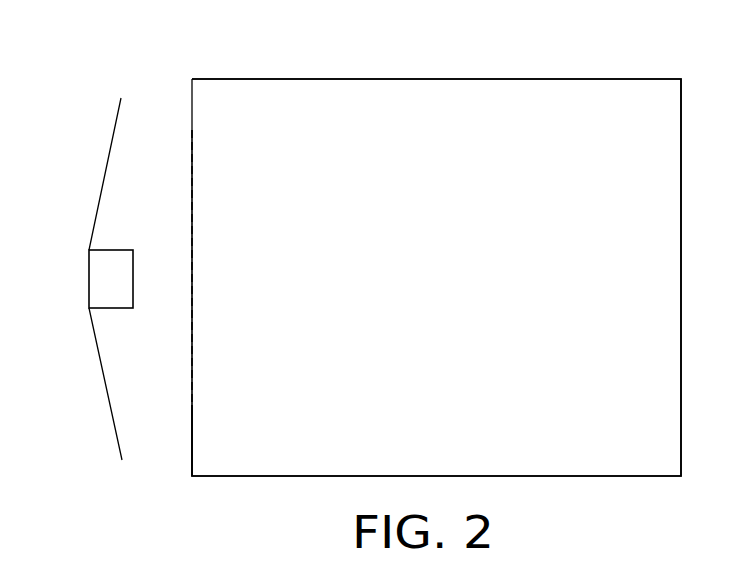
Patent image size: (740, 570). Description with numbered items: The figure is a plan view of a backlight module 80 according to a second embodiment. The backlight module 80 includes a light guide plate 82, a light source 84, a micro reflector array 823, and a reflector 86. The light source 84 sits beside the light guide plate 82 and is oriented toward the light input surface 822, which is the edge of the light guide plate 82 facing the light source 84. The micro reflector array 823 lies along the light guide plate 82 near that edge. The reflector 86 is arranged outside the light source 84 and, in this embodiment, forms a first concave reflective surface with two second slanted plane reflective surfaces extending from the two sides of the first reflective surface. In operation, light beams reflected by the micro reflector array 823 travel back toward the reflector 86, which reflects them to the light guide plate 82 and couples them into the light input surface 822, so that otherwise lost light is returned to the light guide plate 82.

The backlight module 80 is at (356, 49).
The light guide plate 82 is at (506, 75).
The light input surface 822 is at (191, 101).
The micro reflector array 823 is at (191, 371).
The reflector 86 is at (107, 167).
The light source 84 is at (113, 276).